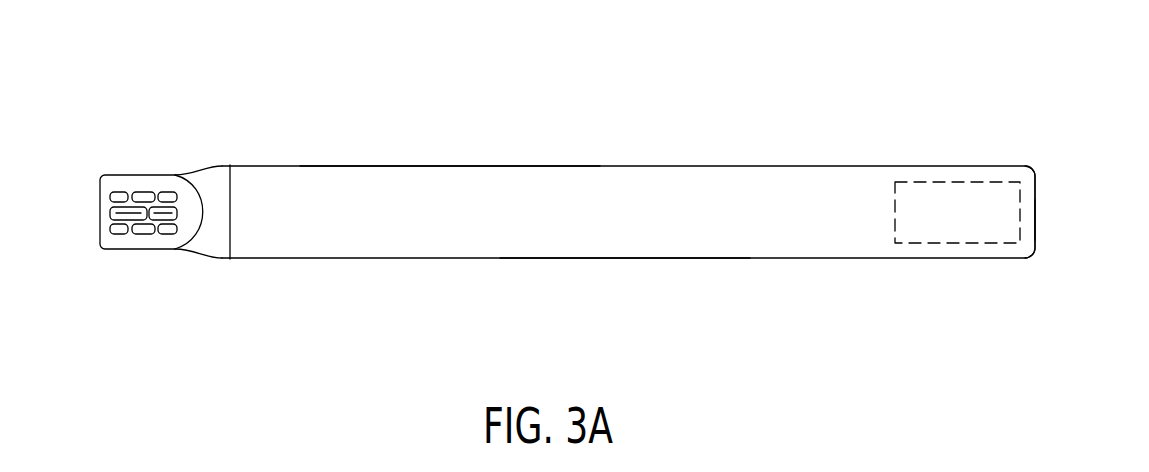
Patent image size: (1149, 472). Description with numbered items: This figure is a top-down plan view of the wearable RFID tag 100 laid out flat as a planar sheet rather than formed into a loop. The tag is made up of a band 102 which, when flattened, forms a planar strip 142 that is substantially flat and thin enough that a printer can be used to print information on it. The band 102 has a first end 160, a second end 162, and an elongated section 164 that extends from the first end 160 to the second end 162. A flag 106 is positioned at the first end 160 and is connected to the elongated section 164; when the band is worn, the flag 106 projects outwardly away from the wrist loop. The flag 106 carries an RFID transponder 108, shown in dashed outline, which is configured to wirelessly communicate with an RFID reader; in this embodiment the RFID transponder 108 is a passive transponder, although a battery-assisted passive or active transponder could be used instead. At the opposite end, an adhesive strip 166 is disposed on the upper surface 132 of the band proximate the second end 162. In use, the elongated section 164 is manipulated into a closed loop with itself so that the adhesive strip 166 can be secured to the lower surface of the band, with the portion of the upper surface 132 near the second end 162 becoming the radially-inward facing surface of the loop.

The RFID tag 100 is at (97, 86).
The band 102 is at (688, 182).
The flag 106 is at (1026, 231).
The RFID transponder 108 is at (955, 226).
The upper surface 132 is at (478, 179).
The planar strip 142 is at (316, 165).
The first end 160 is at (1038, 185).
The second end 162 is at (99, 198).
The elongated section 164 is at (617, 228).
The adhesive strip 166 is at (148, 234).